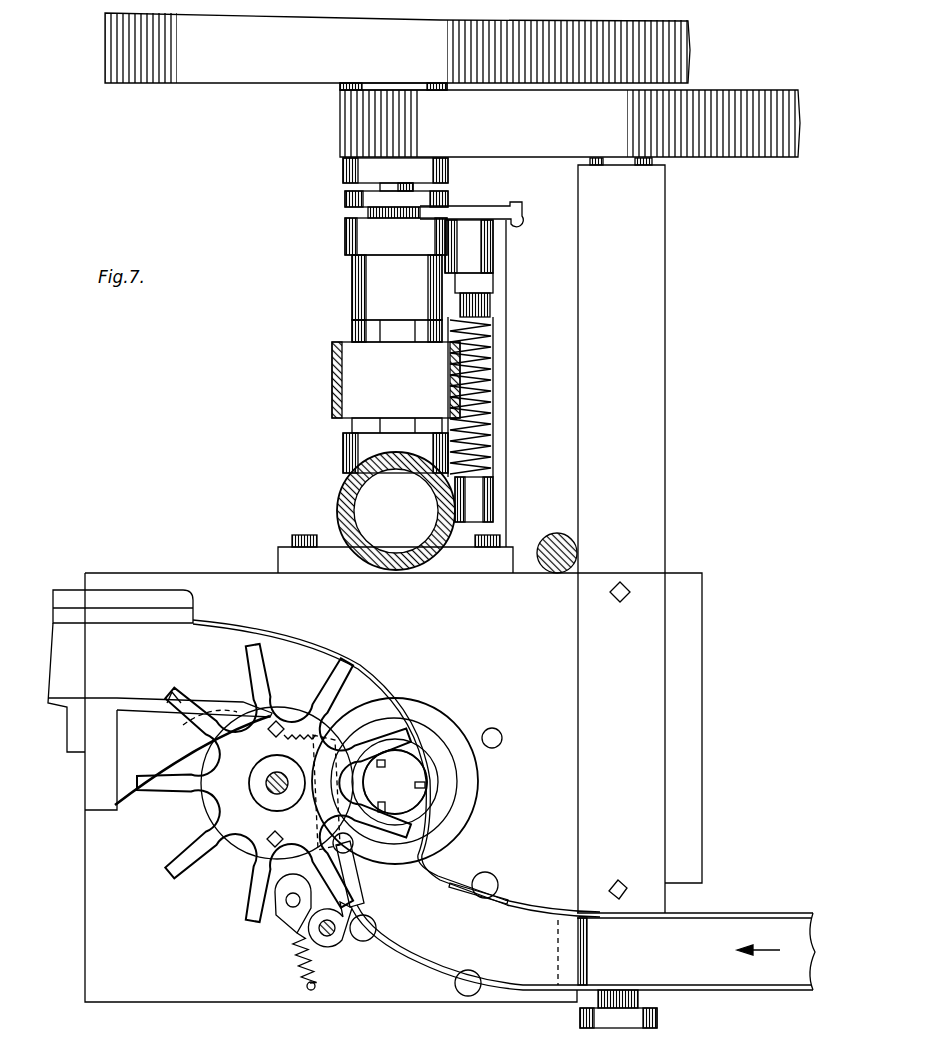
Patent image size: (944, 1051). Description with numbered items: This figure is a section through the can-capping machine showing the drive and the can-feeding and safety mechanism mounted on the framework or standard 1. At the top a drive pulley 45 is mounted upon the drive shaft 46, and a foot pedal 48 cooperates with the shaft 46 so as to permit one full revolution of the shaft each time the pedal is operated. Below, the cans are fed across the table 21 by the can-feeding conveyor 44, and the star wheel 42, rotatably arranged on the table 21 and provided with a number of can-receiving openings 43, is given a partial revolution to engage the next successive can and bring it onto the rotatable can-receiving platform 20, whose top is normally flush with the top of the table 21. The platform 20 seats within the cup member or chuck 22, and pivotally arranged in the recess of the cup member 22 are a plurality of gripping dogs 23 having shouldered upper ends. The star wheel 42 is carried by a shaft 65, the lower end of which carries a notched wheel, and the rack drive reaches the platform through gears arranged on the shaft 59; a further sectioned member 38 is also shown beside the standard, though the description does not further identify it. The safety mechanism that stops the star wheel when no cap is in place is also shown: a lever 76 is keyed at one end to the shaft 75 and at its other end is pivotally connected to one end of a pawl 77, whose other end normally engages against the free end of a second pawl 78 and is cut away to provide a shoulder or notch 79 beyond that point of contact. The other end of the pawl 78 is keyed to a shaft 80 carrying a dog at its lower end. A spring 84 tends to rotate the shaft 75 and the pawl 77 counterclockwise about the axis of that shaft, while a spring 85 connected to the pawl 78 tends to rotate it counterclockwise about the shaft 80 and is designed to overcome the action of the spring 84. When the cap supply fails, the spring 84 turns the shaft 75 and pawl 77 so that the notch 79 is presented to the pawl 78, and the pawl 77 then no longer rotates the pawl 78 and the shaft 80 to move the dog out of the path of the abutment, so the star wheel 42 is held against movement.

The drive pulley 45 is at (235, 68).
The drive shaft 46 is at (390, 333).
The foot pedal 48 is at (502, 458).
The framework or standard 1 is at (352, 492).
The rod 38 is at (558, 534).
The table 21 is at (95, 867).
The can-feeding conveyor 44 is at (758, 923).
The can-receiving openings 43 is at (193, 818).
The star wheel 42 is at (342, 665).
The shaft 80 is at (318, 760).
The spring 85 is at (282, 742).
The shaft 65 is at (265, 782).
The second pawl 78 is at (312, 820).
The cup member or chuck 22 is at (435, 795).
The can-receiving platform 20 is at (408, 765).
The gripping dogs 23 is at (395, 782).
The shaft 59 is at (501, 737).
The shoulder or notch 79 is at (358, 864).
The pawl 77 is at (278, 927).
The spring 84 is at (297, 968).
The shaft 75 is at (342, 937).
The lever 76 is at (317, 943).